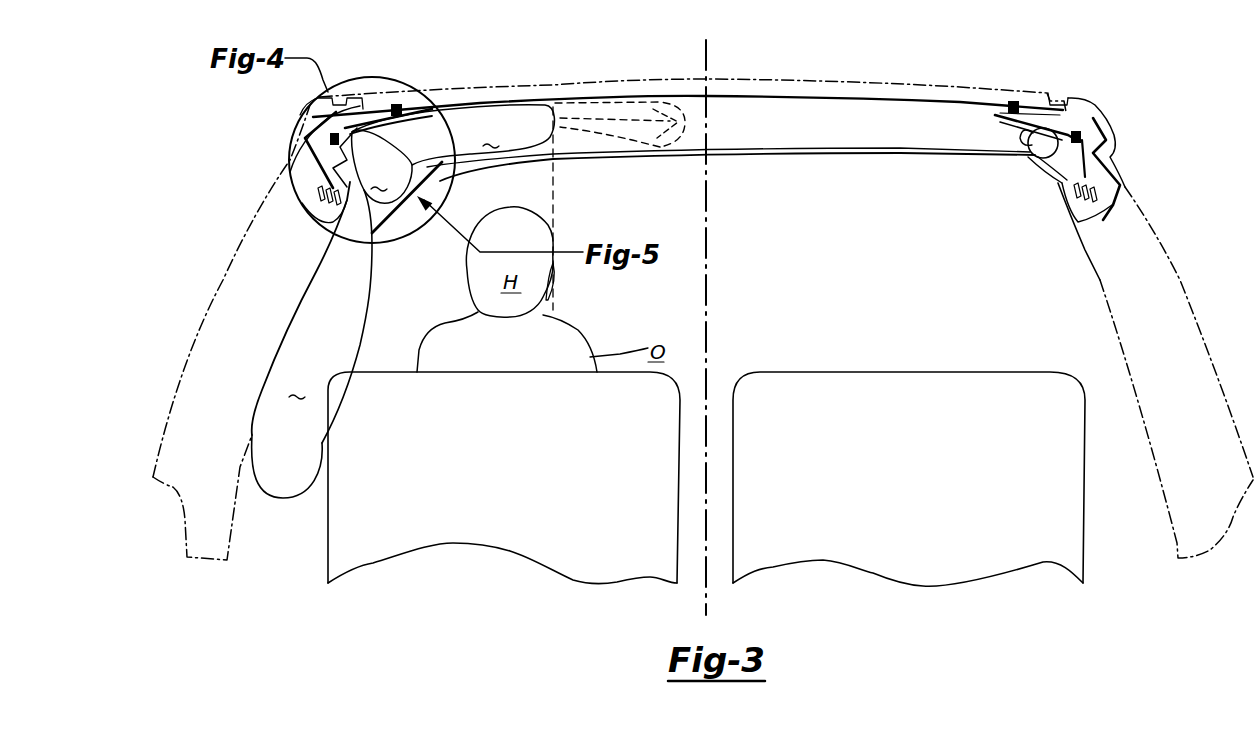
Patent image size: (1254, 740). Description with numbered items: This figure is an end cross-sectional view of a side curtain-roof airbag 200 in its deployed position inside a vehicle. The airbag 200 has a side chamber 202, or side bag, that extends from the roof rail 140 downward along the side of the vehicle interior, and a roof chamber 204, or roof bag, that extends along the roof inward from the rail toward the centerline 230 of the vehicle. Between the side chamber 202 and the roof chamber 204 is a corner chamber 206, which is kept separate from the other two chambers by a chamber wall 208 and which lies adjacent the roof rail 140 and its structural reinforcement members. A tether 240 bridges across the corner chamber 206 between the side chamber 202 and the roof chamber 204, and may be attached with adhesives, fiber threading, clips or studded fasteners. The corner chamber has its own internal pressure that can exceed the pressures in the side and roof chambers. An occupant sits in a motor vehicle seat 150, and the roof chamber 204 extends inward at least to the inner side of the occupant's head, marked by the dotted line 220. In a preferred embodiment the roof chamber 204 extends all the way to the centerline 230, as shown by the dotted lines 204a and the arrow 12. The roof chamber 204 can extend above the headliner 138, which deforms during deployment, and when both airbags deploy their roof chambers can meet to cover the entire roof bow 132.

The arrow 12 is at (622, 134).
The roof bow 132 is at (733, 98).
The headliner 138 is at (572, 157).
The roof rail 140 is at (353, 108).
The motor vehicle seat 150 is at (495, 465).
The side curtain-roof airbag 200 is at (1024, 156).
The side chamber 202 is at (280, 499).
The roof chamber 204 is at (553, 103).
The dotted lines 204a is at (668, 143).
The corner chamber 206 is at (428, 183).
The chamber wall 208 is at (417, 118).
The dotted line 220 is at (556, 289).
The centerline 230 is at (708, 295).
The tether 240 is at (395, 207).